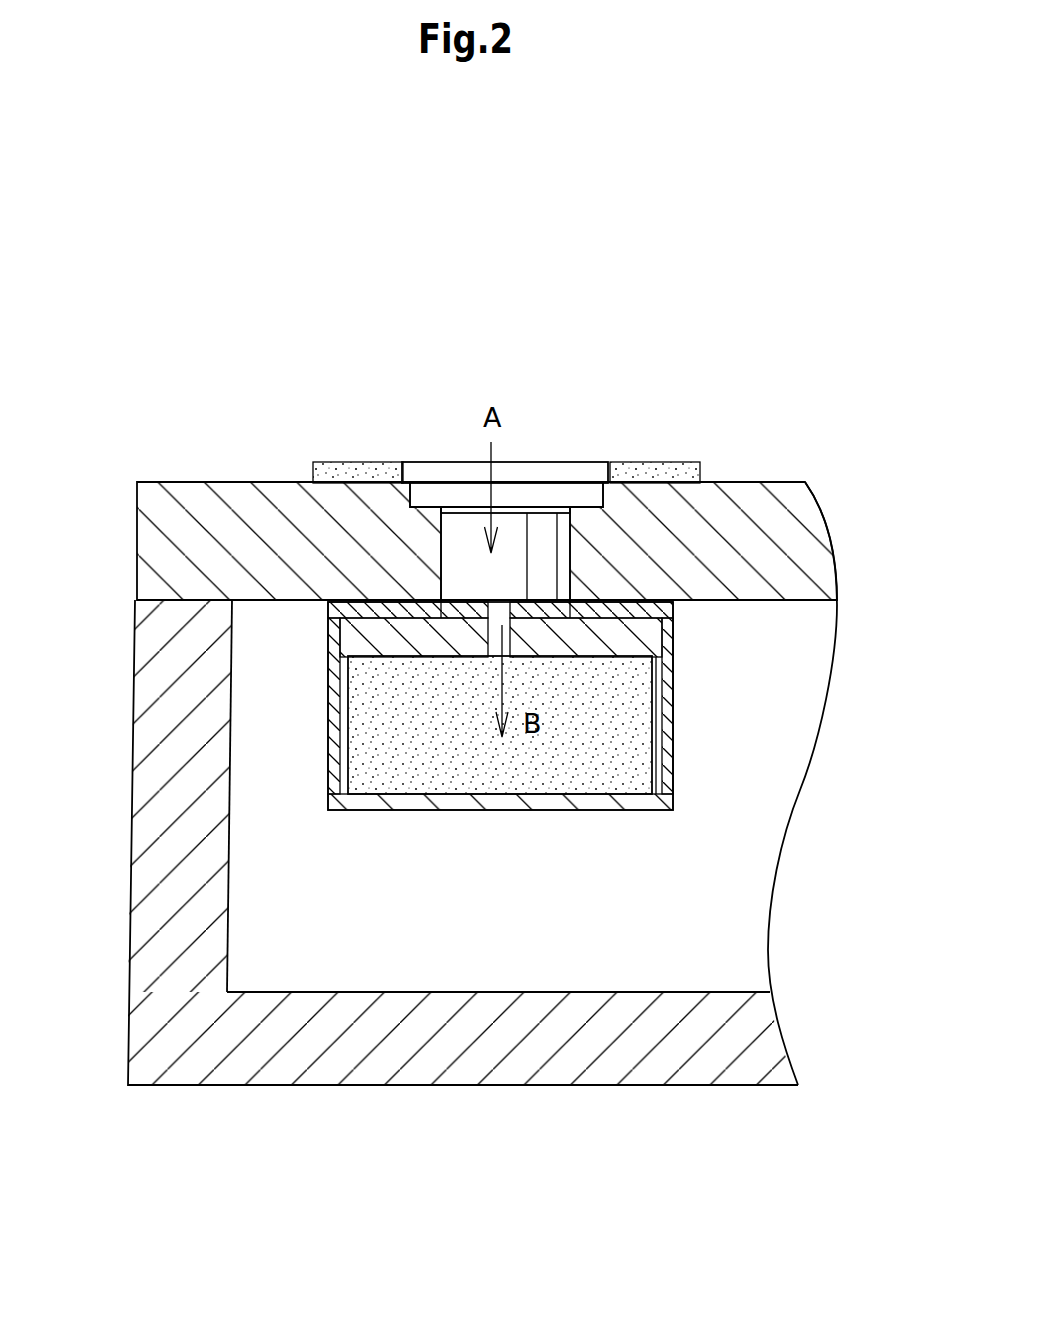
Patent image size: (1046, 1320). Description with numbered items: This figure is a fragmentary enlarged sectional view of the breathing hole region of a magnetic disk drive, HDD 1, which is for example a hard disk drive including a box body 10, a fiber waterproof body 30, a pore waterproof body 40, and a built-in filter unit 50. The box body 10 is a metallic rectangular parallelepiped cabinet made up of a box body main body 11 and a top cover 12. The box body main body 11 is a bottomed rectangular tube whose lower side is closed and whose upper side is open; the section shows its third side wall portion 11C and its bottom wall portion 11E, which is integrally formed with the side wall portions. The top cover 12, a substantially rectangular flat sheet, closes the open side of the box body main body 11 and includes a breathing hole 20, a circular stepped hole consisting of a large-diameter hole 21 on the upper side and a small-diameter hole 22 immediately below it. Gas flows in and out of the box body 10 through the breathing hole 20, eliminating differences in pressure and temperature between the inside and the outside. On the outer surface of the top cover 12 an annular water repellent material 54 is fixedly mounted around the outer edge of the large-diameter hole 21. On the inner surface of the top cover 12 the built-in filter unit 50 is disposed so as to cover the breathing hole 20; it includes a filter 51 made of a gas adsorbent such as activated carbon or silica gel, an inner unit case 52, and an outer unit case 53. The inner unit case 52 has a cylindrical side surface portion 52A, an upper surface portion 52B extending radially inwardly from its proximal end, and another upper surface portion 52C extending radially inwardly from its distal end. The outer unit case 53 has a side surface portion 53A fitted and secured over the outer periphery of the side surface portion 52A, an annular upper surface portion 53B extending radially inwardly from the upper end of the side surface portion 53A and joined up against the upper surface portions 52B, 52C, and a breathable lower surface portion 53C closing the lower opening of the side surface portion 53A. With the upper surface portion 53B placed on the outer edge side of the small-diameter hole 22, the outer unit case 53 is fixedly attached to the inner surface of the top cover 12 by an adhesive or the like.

The HDD 1 is at (770, 367).
The box body 10 is at (467, 465).
The box body main body 11 is at (399, 907).
The third side wall portion 11C is at (157, 725).
The bottom wall portion 11E is at (648, 1058).
The top cover 12 is at (235, 500).
The breathing hole 20 is at (567, 550).
The large-diameter hole 21 is at (600, 485).
The small-diameter hole 22 is at (445, 543).
The fiber waterproof body 30 is at (509, 497).
The pore waterproof body 40 is at (467, 527).
The built-in filter unit 50 is at (622, 654).
The filter 51 is at (350, 678).
The inner unit case 52 is at (625, 646).
The side surface portion 52A is at (672, 642).
The upper surface portion 52B is at (330, 600).
The upper surface portion 52C is at (640, 622).
The outer unit case 53 is at (426, 776).
The side surface portion 53A is at (327, 753).
The annular upper surface portion 53B is at (620, 602).
The lower surface portion 53C is at (438, 810).
The water repellent material 54 is at (653, 462).